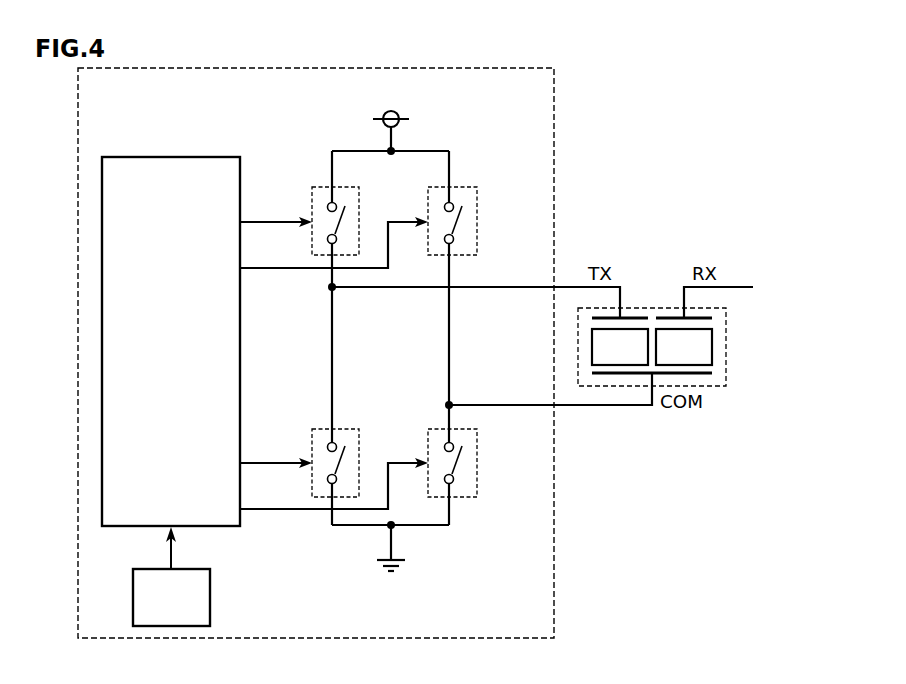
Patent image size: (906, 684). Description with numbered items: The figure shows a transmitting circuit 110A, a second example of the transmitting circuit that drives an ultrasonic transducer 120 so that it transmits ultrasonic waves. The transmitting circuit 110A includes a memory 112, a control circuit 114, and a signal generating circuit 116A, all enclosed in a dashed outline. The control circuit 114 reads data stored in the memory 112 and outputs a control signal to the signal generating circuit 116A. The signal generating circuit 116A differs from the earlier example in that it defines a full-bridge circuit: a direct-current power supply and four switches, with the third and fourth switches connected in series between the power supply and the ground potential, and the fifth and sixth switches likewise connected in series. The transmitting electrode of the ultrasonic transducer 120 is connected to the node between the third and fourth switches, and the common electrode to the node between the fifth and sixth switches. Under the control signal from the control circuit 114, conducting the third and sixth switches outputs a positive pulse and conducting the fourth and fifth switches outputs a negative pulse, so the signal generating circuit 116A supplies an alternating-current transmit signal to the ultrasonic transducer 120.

The transmitting circuit 110A is at (556, 84).
The memory 112 is at (188, 567).
The control circuit 114 is at (188, 157).
The signal generating circuit 116A is at (493, 151).
The ultrasonic transducer 120 is at (727, 347).